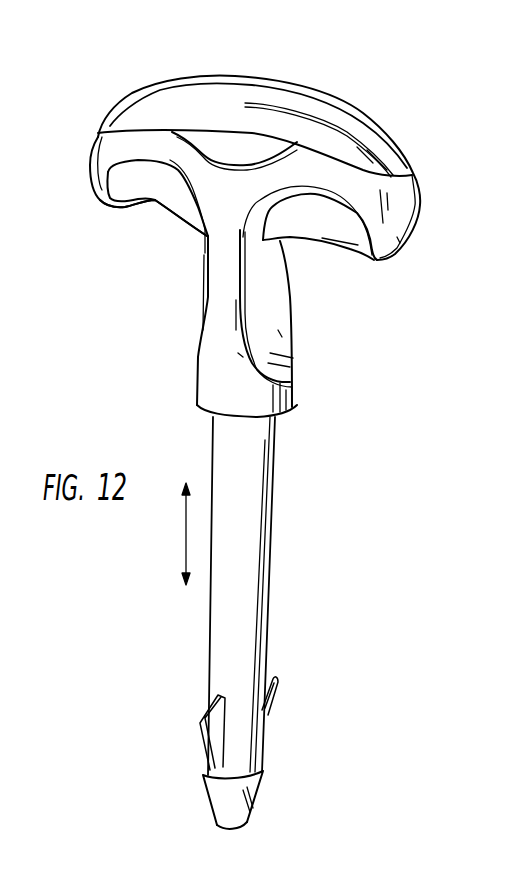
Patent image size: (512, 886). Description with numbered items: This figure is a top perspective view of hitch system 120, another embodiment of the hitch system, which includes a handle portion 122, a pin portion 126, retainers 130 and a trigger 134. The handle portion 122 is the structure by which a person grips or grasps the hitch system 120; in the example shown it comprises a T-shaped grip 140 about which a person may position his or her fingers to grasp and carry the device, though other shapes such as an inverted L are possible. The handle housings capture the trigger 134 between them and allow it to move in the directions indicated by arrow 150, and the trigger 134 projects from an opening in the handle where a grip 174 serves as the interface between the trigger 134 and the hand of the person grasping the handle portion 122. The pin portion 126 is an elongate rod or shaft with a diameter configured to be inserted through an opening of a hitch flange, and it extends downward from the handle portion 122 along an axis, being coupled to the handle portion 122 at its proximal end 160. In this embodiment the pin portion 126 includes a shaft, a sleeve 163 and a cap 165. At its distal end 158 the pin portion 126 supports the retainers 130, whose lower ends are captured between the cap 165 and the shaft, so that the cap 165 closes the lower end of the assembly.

The hitch system 120 is at (86, 117).
The T-shaped grip 140 is at (420, 178).
The grip 174 is at (160, 202).
The trigger 134 is at (348, 249).
The handle portion 122 is at (298, 340).
The proximal end 160 is at (287, 415).
The pin portion 126 is at (270, 598).
The sleeve 163 is at (250, 520).
The arrow 150 is at (183, 540).
The retainers 130 is at (277, 682).
The cap 165 is at (257, 803).
The distal end 158 is at (219, 829).